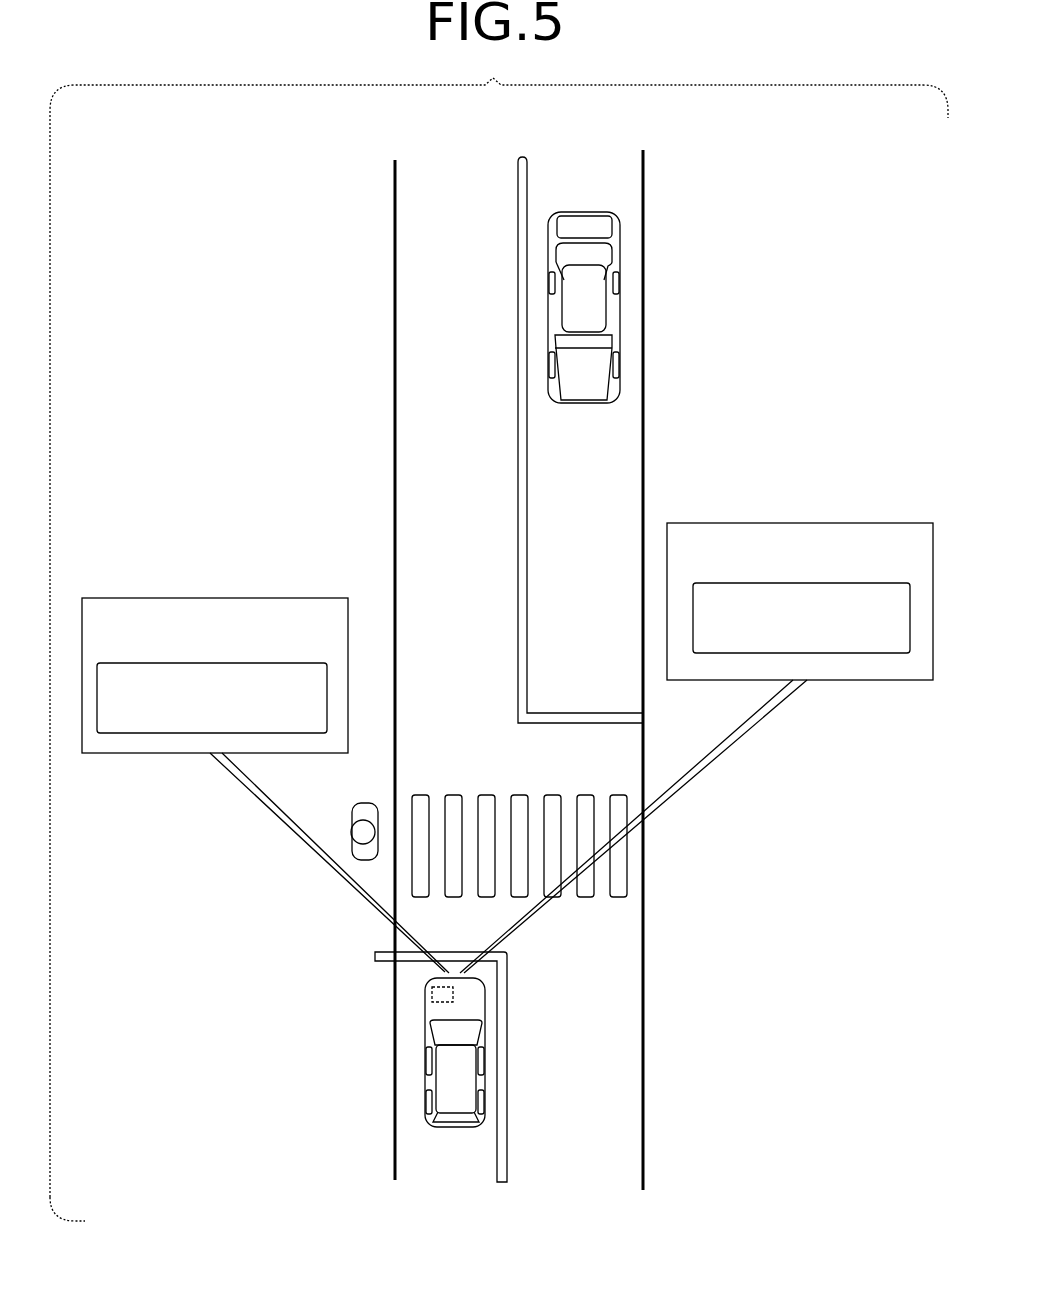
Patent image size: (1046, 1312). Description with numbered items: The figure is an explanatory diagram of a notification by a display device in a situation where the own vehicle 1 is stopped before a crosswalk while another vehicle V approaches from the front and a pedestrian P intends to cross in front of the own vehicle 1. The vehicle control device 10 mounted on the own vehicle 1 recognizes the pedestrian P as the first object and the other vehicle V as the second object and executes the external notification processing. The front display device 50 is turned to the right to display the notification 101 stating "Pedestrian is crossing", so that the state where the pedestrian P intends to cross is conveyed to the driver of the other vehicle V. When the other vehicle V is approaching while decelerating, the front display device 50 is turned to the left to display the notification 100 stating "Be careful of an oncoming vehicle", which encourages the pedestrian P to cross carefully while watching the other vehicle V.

The own vehicle 1 is at (435, 1075).
The vehicle control device 10 is at (432, 995).
The front display device 50 is at (310, 663).
The notification 100 is at (223, 597).
The notification 101 is at (798, 522).
The other vehicle V is at (619, 367).
The pedestrian P is at (347, 830).